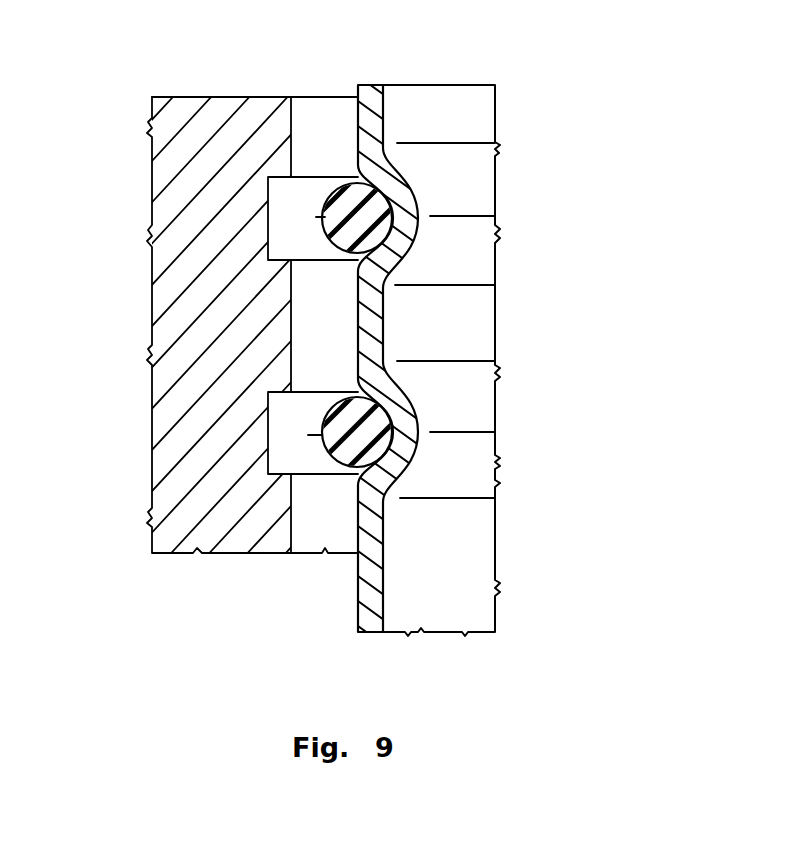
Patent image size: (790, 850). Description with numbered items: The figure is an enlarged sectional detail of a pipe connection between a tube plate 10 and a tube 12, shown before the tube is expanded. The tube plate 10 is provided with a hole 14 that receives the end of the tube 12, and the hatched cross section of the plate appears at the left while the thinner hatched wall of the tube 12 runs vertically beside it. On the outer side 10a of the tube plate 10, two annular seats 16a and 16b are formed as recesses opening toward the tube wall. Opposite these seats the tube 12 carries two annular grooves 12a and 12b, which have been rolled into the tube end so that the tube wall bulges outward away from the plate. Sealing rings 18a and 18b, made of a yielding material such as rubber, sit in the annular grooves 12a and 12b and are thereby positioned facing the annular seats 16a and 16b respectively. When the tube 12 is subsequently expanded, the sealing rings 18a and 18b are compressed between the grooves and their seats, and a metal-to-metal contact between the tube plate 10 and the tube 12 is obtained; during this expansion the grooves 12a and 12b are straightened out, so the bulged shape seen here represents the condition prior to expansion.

The tube plate 10 is at (190, 152).
The outer side of the tube plate 10a is at (228, 95).
The tube 12 is at (368, 302).
The annular groove 12a is at (367, 253).
The annular groove 12b is at (363, 397).
The hole 14 is at (292, 348).
The annular seat 16a is at (317, 182).
The annular seat 16b is at (323, 470).
The sealing ring 18a is at (398, 222).
The sealing ring 18b is at (397, 455).